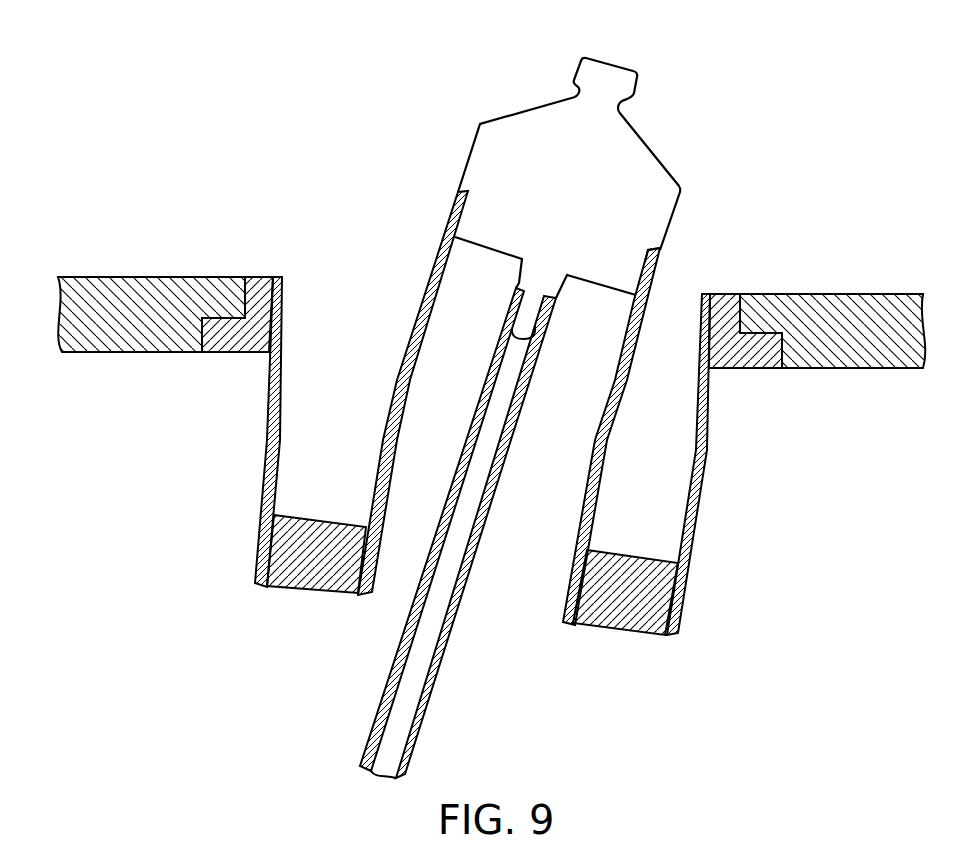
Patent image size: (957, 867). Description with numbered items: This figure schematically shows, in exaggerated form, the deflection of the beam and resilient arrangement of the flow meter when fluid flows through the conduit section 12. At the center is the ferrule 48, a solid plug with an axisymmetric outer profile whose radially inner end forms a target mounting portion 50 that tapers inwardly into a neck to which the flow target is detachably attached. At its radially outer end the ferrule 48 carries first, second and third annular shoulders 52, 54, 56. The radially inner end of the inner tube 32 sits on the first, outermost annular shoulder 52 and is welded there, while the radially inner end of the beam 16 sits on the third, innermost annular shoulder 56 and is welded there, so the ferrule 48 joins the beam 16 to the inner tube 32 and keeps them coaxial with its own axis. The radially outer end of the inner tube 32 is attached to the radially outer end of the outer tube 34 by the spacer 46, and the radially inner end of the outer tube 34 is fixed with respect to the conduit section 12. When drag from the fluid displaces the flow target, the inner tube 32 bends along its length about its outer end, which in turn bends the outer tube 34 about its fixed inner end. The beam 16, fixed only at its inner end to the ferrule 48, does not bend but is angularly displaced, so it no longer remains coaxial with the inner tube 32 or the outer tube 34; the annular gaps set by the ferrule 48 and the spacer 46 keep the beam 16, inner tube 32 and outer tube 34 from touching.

The conduit section 12 is at (142, 353).
The beam 16 is at (387, 682).
The inner tube 32 is at (396, 380).
The outer tube 34 is at (268, 446).
The spacer 46 is at (308, 592).
The ferrule 48 is at (642, 162).
The target mounting portion 50 is at (610, 77).
The first annular shoulder 52 is at (660, 249).
The second annular shoulder 54 is at (597, 283).
The third annular shoulder 56 is at (517, 281).